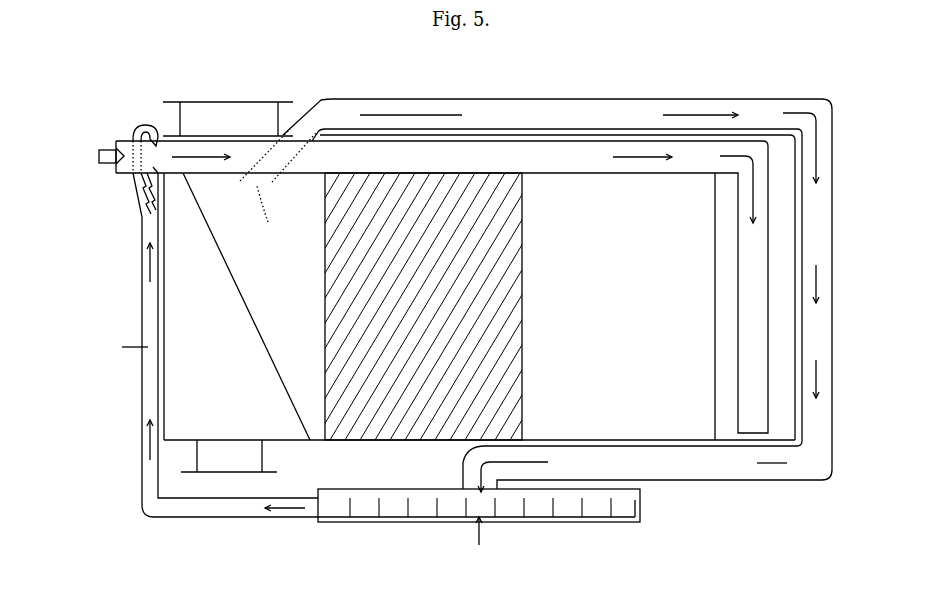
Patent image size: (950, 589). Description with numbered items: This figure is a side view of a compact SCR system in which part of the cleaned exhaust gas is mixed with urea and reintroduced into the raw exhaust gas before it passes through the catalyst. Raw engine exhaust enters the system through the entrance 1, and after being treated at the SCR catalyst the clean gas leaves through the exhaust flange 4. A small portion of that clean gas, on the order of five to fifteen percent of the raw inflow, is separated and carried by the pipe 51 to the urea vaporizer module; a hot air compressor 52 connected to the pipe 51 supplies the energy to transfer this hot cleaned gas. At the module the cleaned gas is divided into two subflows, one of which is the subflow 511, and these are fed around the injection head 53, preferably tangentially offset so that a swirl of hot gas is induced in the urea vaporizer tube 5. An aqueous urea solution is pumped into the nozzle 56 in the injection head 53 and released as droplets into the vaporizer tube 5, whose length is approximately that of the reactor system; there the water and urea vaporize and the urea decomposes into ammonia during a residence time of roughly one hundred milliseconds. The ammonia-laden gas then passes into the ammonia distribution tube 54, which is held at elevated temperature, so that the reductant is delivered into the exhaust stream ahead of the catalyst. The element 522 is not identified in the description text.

The entrance 1 is at (228, 465).
The exhaust flange 4 is at (232, 110).
The urea vaporizer tube 5 is at (647, 171).
The pipe 51 is at (417, 105).
The hot air compressor 52 is at (538, 510).
The injection head 53 is at (128, 190).
The ammonia distribution tube 54 is at (758, 252).
The nozzle 56 is at (97, 158).
The subflow 511 is at (134, 140).
The hook-shaped nozzle 522 is at (150, 127).